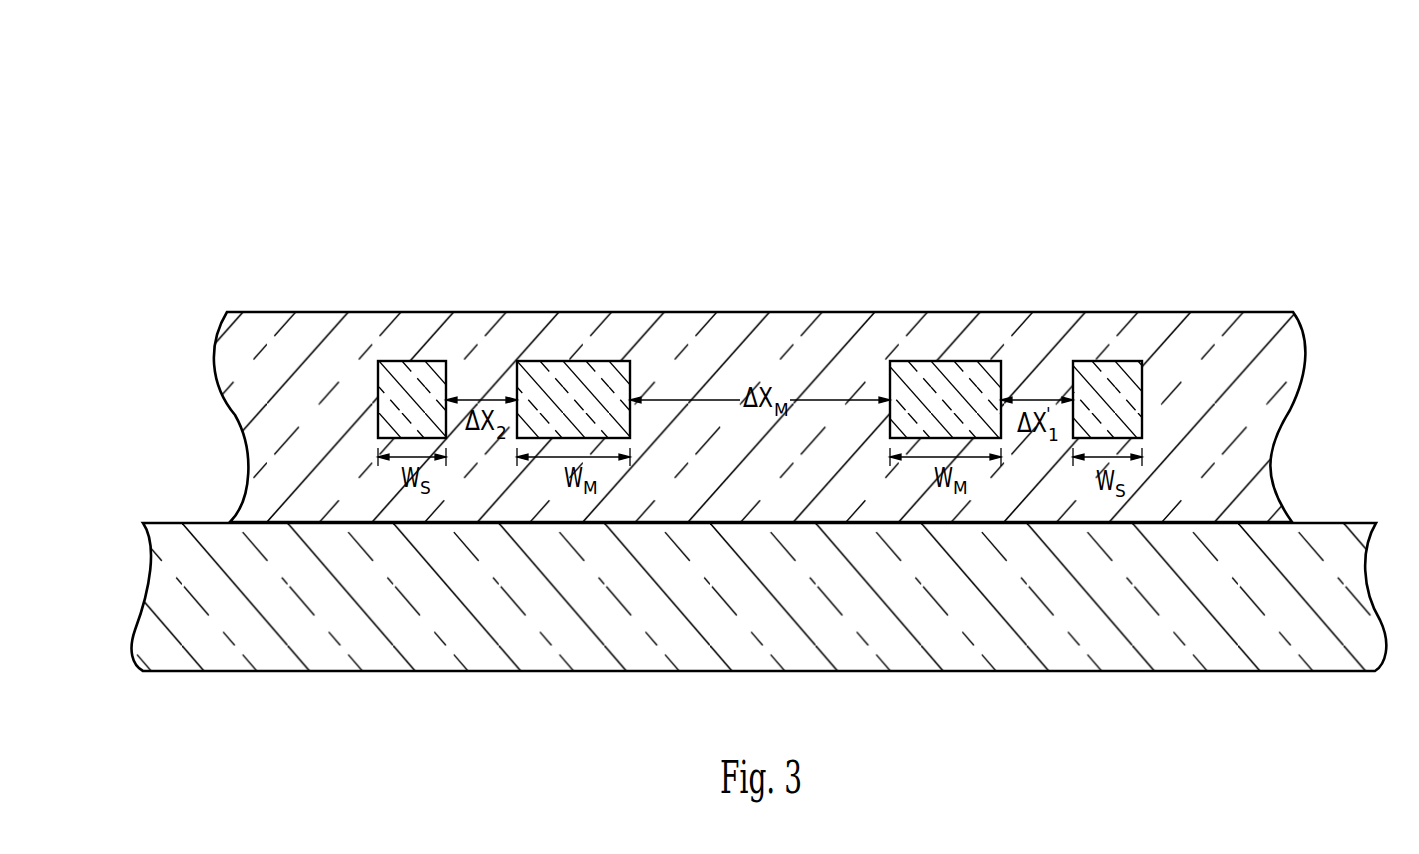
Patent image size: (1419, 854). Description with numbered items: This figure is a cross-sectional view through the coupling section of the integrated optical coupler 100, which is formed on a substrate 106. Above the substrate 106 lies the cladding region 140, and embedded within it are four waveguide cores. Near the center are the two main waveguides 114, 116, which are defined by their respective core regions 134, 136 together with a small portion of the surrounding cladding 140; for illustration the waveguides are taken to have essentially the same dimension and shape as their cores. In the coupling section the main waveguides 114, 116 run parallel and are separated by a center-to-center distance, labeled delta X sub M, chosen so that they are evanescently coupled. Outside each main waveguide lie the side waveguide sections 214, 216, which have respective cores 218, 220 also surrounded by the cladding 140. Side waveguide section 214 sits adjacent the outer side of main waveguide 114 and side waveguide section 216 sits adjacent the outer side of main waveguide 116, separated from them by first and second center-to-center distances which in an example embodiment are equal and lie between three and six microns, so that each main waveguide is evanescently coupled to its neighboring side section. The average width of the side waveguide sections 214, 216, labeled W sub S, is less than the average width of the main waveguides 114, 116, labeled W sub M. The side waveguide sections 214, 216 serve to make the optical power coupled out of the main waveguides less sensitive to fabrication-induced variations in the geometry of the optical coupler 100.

The integrated optical coupler 100 is at (1184, 97).
The substrate 106 is at (1370, 568).
The main waveguide 114 is at (606, 312).
The main waveguide 116 is at (916, 310).
The core region 134 is at (965, 361).
The core region 136 is at (553, 361).
The cladding region 140 is at (1296, 400).
The side waveguide section 214 is at (441, 312).
The side waveguide section 216 is at (1080, 311).
The core 218 is at (1120, 361).
The core 220 is at (393, 361).